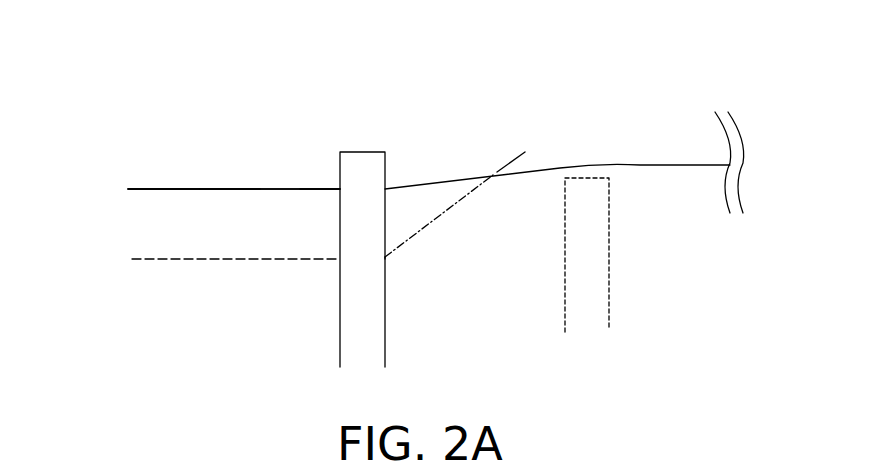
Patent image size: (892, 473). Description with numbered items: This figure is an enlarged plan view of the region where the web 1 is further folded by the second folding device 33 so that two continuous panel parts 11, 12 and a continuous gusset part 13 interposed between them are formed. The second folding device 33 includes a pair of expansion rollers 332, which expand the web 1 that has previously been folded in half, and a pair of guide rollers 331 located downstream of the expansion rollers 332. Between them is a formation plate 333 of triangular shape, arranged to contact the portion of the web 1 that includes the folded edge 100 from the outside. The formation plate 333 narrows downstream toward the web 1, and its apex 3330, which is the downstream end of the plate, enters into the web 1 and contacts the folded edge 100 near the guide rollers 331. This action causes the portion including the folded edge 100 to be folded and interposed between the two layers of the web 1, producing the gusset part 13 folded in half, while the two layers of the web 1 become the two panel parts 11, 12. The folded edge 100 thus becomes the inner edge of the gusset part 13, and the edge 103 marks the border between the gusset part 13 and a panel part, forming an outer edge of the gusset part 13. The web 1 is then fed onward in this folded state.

The web 1 is at (675, 178).
The folded edge 100 is at (275, 257).
The edge of panel part 103 is at (142, 188).
The panel part 11 is at (213, 233).
The panel part 12 is at (175, 232).
The gusset part 13 is at (323, 213).
The second folding device 33 is at (510, 208).
The guide rollers 331 is at (362, 152).
The expansion rollers 332 is at (609, 270).
The formation plate 333 is at (502, 163).
The apex 3330 is at (385, 258).